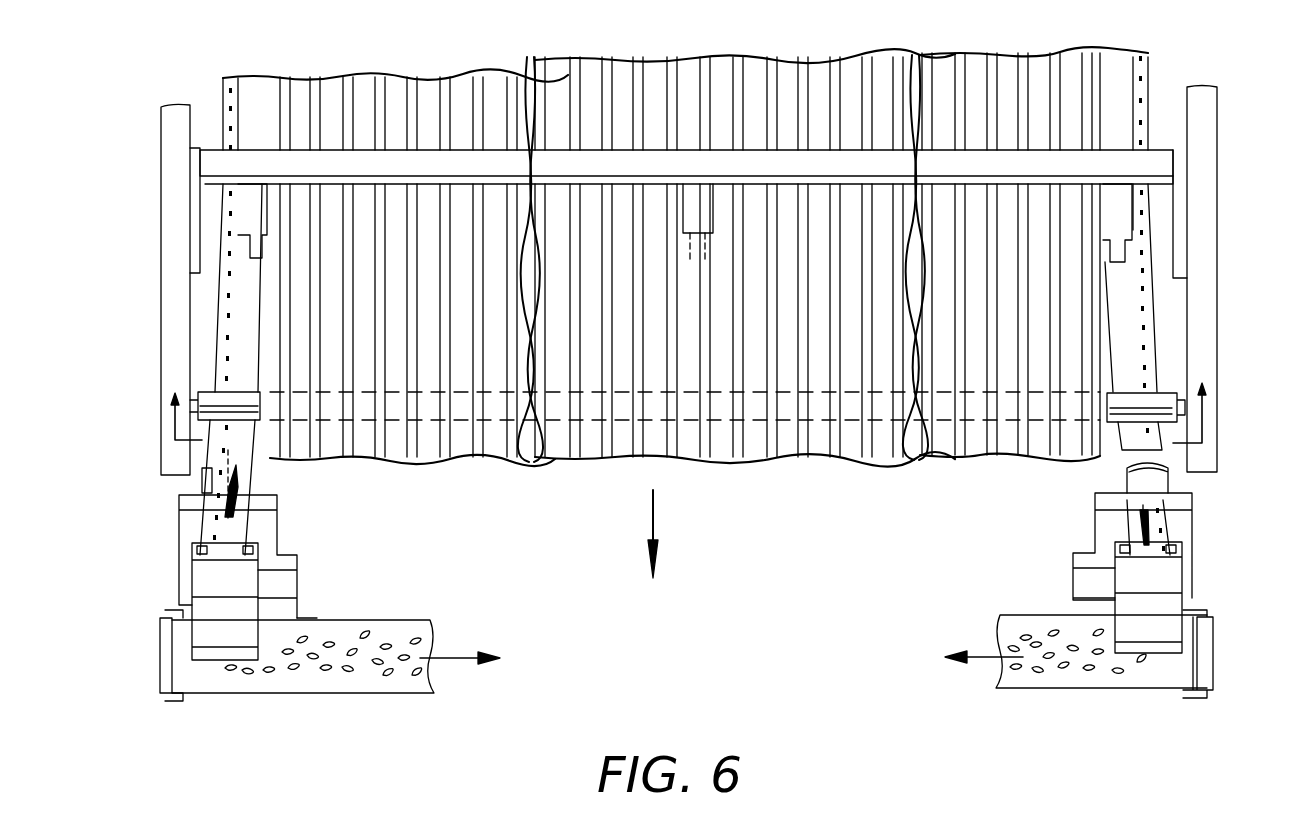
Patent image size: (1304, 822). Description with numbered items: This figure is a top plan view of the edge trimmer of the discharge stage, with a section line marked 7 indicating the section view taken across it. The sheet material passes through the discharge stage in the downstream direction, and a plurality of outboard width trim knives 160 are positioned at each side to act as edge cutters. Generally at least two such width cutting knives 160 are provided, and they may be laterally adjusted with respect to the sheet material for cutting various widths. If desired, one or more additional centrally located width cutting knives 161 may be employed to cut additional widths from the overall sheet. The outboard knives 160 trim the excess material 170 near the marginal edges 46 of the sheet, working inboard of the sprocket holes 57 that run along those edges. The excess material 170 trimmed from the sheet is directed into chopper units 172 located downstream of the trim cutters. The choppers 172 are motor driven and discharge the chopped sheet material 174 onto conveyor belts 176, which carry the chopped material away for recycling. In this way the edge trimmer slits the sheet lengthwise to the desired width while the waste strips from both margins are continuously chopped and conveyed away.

The marginal edges 46 is at (1148, 80).
The outboard width trim knives 160 is at (248, 192).
The centrally located width cutting knives 161 is at (702, 187).
The excess material 170 is at (248, 467).
The sprocket holes 57 is at (217, 518).
The chopper units 172 is at (215, 539).
The chopped sheet material 174 is at (360, 640).
The conveyor belts 176 is at (430, 627).
The section line 7- 7 is at (686, 413).